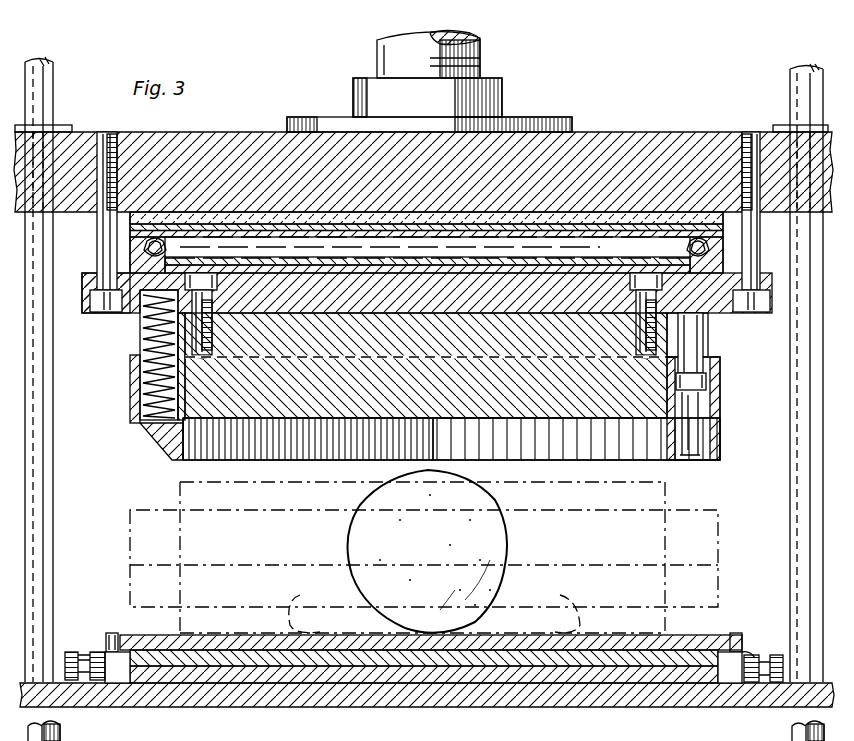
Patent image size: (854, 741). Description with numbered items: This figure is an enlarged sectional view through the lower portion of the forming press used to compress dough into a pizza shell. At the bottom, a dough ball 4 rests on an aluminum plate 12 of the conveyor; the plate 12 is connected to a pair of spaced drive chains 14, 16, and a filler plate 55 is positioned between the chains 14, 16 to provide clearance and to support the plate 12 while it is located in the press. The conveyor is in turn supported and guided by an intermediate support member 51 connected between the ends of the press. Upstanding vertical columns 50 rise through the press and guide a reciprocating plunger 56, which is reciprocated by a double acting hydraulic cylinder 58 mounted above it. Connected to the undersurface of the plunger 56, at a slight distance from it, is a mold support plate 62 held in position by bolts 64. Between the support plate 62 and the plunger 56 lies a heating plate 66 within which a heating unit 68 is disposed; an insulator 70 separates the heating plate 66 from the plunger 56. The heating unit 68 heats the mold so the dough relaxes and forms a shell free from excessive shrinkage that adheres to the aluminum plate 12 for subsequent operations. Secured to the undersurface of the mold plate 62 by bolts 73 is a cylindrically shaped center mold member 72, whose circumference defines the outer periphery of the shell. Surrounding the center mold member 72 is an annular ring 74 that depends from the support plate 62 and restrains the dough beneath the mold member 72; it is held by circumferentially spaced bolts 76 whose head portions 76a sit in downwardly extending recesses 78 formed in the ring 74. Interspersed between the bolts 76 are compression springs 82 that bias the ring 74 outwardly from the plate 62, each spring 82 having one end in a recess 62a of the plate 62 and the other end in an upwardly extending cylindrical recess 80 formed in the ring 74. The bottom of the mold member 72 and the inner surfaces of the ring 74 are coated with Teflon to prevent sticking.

The dough ball 4 is at (485, 545).
The aluminum plate 12 is at (135, 637).
The drive chain 14 is at (82, 656).
The drive chain 16 is at (766, 656).
The vertical column 50 is at (48, 96).
The intermediate support member 51 is at (75, 698).
The filler plate 55 is at (142, 665).
The reciprocating plunger 56 is at (672, 148).
The double acting hydraulic cylinder 58 is at (480, 40).
The mold support plate 62 is at (715, 312).
The recess of mold support plate 62a is at (128, 314).
The bolt 64 is at (105, 268).
The heating plate 66 is at (147, 245).
The heating unit 68 is at (318, 245).
The insulator 70 is at (388, 220).
The center mold member 72 is at (592, 405).
The bolt 73 is at (212, 298).
The annular ring 74 is at (168, 432).
The bolt 76 is at (705, 345).
The bolt head portion 76a is at (704, 383).
The downwardly extending recess 78 is at (712, 438).
The upwardly extending cylindrical recess 80 is at (130, 405).
The compression spring 82 is at (145, 345).